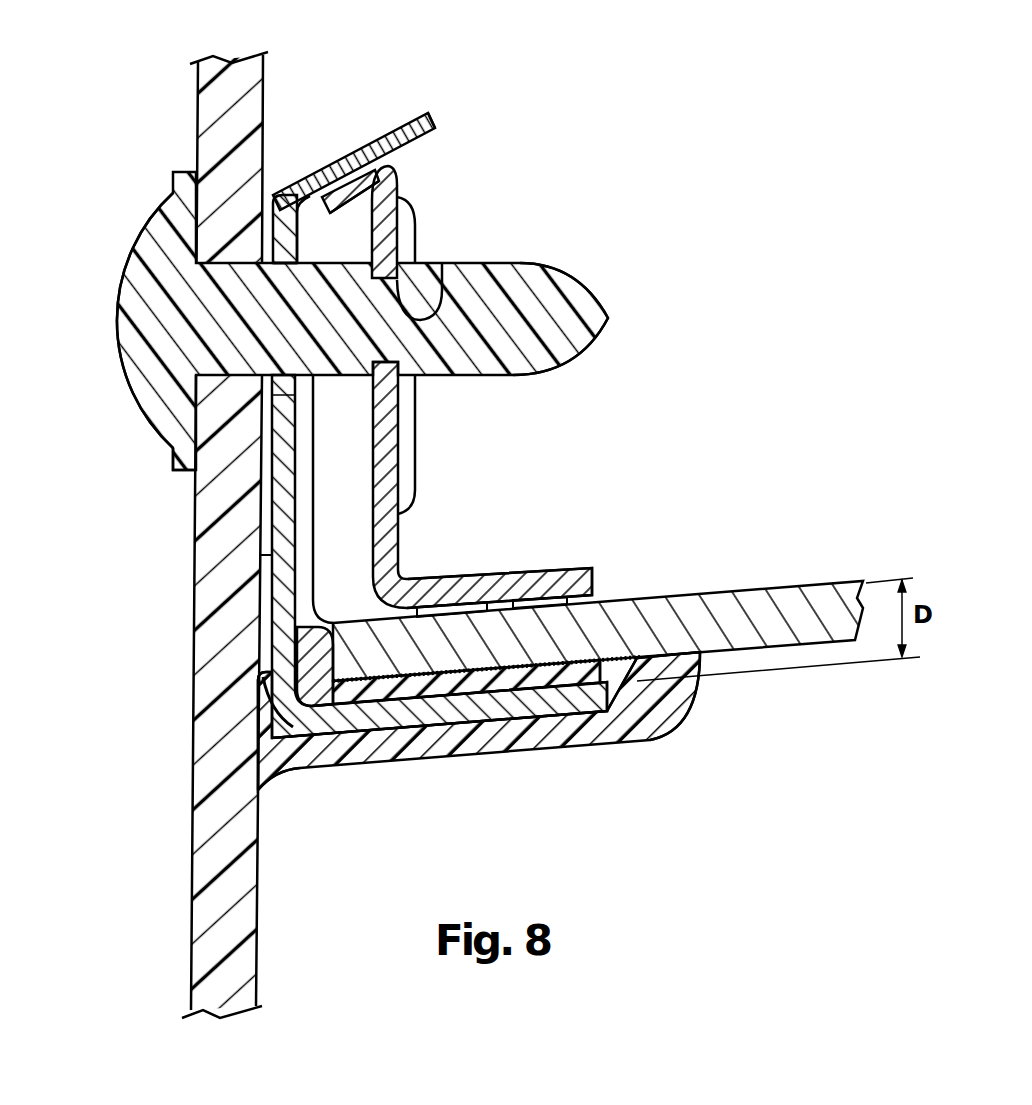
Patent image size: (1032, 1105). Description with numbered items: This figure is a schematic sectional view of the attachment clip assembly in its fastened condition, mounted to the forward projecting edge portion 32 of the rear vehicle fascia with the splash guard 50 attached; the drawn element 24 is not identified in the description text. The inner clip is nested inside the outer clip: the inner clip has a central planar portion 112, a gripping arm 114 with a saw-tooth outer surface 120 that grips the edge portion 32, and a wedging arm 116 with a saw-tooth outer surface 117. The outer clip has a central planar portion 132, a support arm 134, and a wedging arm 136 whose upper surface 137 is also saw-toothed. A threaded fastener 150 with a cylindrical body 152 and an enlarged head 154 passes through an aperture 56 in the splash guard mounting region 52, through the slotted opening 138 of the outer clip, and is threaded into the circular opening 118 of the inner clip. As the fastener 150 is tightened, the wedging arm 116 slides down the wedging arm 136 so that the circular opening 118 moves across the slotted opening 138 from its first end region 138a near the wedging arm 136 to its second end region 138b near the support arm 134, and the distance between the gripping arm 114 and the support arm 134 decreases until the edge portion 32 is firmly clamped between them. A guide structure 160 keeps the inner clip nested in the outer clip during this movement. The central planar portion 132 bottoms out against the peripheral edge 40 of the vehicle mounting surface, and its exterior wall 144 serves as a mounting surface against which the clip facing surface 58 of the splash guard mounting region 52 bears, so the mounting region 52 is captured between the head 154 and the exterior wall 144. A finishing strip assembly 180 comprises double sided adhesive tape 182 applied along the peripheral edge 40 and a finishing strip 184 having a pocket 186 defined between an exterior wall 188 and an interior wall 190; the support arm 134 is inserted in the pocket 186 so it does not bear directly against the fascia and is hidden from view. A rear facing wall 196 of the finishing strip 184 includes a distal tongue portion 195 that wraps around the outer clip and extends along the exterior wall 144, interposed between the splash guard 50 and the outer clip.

The glass panel 24 is at (745, 618).
The forward projecting edge portion 32 is at (408, 650).
The peripheral edge 40 is at (300, 627).
The splash guard 50 is at (210, 767).
The splash guard mounting region 52 is at (222, 495).
The aperture 56 is at (197, 370).
The clip facing surface 58 is at (260, 463).
The central planar portion 112 is at (405, 455).
The gripping arm 114 is at (490, 585).
The wedging arm 116 is at (350, 188).
The saw-tooth outer surface 117 is at (350, 212).
The circular opening 118 is at (442, 275).
The saw-tooth outer surface 120 is at (493, 620).
The central planar portion 132 is at (287, 565).
The support arm 134 is at (467, 707).
The wedging arm 136 is at (378, 147).
The inner or upper surface 137 is at (415, 160).
The slotted opening 138 is at (287, 242).
The first end region 138a is at (282, 233).
The second end region 138b is at (378, 402).
The exterior wall 144 is at (268, 600).
The fastener 150 is at (100, 332).
The fastener body 152 is at (483, 312).
The head 154 is at (150, 368).
The guide structure 160 is at (415, 156).
The finishing strip assembly 180 is at (451, 750).
The double sided adhesive tape 182 is at (637, 680).
The finishing strip 184 is at (412, 757).
The pocket 186 is at (372, 725).
The exterior wall 188 is at (502, 750).
The interior wall 190 is at (615, 663).
The distal tongue portion 195 is at (263, 677).
The rear facing wall 196 is at (262, 718).